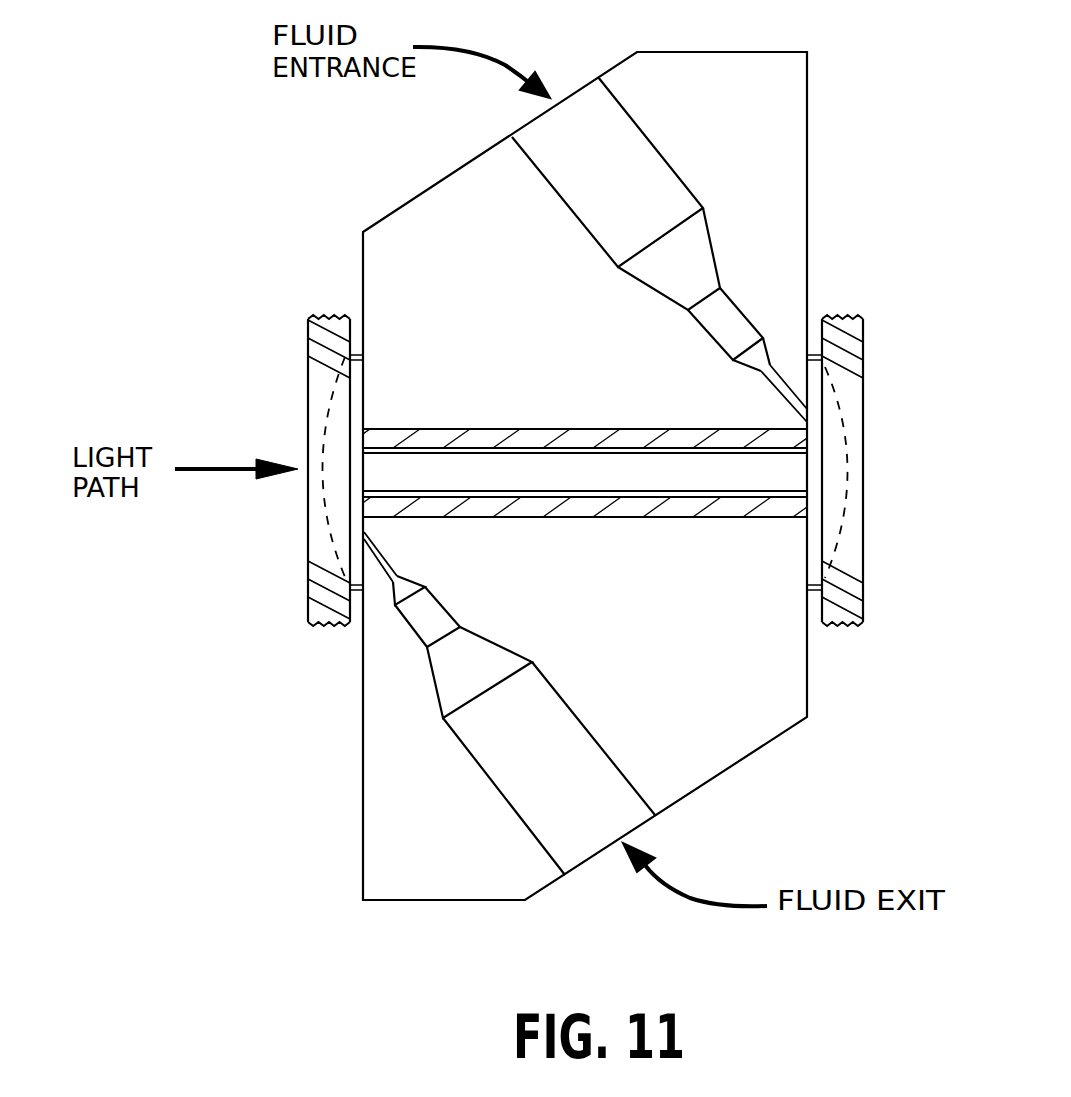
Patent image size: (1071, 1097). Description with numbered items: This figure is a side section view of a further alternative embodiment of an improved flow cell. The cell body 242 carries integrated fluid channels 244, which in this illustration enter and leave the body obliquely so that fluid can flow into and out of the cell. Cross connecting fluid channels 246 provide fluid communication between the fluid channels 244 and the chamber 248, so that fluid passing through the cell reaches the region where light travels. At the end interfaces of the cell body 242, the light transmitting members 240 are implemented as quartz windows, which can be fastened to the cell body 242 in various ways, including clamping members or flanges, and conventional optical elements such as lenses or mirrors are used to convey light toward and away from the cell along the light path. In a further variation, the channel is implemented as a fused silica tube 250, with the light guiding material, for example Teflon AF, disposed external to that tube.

The light transmitting member 240 is at (328, 430).
The cell body 242 is at (692, 72).
The fluid channel 244 is at (590, 98).
The cross connecting fluid channel 246 is at (845, 317).
The chamber 248 is at (693, 480).
The fused silica tube 250 is at (627, 490).